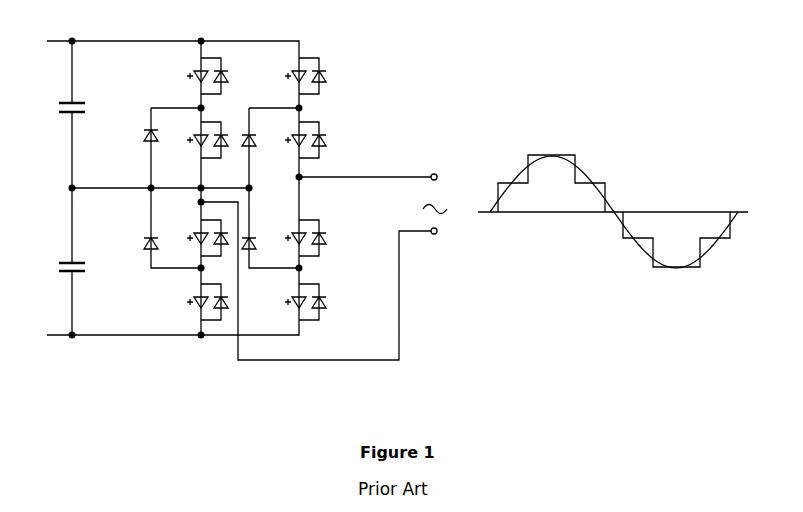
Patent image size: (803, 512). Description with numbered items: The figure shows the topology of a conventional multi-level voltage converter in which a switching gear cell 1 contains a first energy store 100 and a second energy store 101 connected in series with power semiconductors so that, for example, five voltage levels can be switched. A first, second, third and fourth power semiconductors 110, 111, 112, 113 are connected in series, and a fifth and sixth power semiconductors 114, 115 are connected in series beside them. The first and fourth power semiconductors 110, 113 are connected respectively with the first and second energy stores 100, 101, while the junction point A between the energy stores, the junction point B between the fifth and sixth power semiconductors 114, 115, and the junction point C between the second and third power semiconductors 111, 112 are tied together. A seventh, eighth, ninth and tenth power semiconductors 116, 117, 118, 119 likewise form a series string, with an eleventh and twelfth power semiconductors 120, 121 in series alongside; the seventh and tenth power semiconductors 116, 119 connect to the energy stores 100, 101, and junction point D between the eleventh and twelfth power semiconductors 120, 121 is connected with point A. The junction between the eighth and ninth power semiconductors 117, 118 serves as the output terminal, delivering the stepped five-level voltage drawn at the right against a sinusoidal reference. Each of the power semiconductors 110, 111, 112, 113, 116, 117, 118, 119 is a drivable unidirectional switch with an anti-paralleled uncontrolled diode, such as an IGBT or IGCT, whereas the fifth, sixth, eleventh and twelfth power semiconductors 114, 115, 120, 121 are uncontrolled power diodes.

The switching gear cell 1 is at (254, 223).
The first energy store 100 is at (54, 94).
The second energy store 101 is at (54, 253).
The first power semiconductor 110 is at (186, 76).
The second power semiconductor 111 is at (193, 152).
The third power semiconductor 112 is at (192, 230).
The fourth power semiconductor 113 is at (185, 302).
The fifth power semiconductor 114 is at (131, 136).
The sixth power semiconductor 115 is at (130, 245).
The seventh power semiconductor 116 is at (323, 76).
The eighth power semiconductor 117 is at (323, 140).
The ninth power semiconductor 118 is at (322, 238).
The tenth power semiconductor 119 is at (322, 302).
The eleventh power semiconductor 120 is at (264, 131).
The twelfth power semiconductor 121 is at (264, 229).